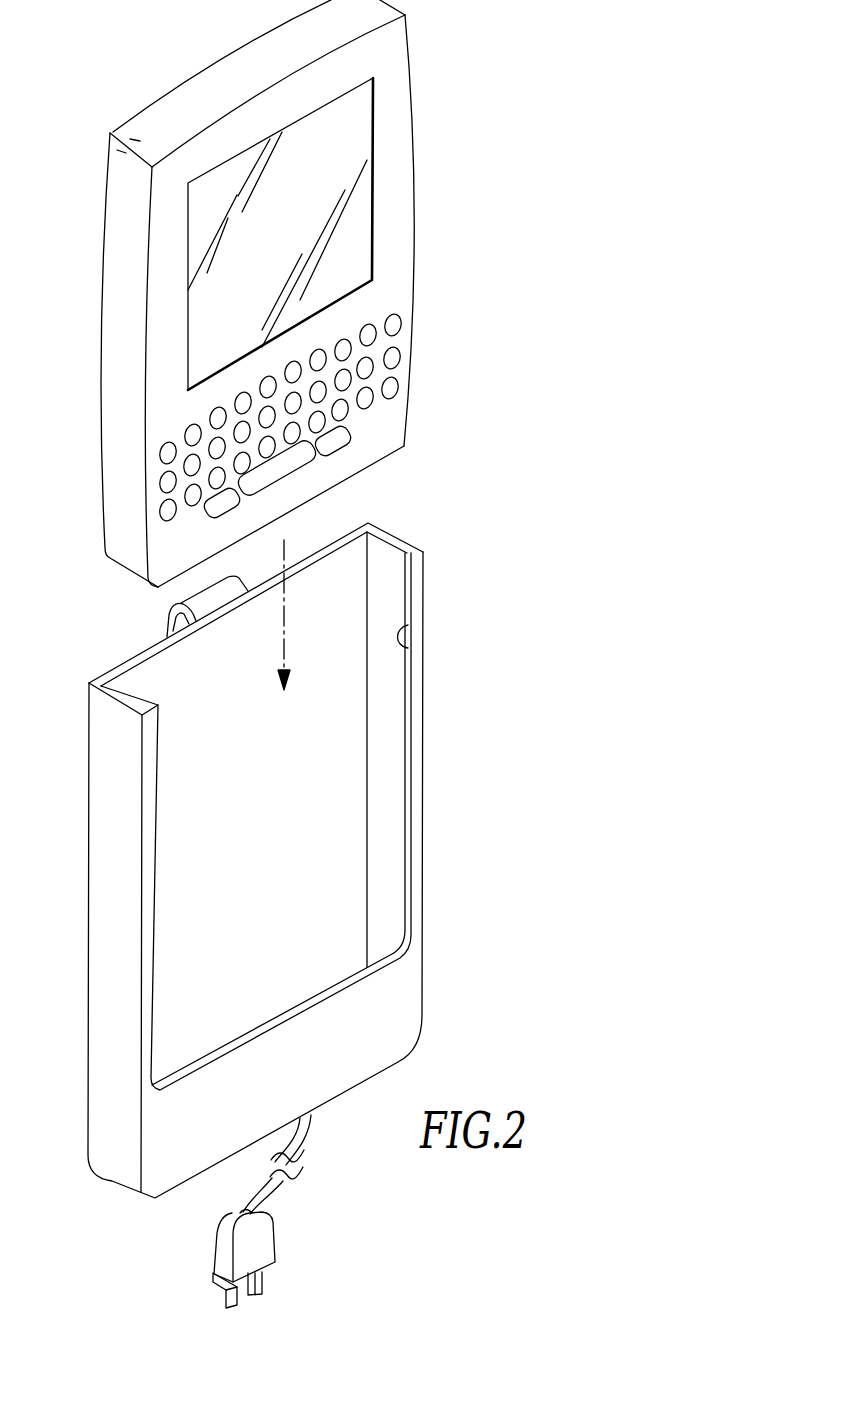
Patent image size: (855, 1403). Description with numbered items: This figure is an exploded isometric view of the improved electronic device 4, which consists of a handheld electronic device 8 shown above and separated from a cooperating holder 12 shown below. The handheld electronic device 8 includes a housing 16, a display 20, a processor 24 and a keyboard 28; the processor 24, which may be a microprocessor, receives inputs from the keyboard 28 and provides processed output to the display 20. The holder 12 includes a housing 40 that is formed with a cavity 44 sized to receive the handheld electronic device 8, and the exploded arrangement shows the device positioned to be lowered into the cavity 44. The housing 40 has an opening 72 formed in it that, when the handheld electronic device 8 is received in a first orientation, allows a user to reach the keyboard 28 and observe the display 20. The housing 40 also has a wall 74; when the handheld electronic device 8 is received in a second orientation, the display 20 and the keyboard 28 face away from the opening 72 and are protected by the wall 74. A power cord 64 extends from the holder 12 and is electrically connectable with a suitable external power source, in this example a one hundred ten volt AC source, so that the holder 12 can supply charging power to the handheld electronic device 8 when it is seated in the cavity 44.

The electronic device 4 is at (291, 293).
The handheld electronic device 8 is at (287, 293).
The holder 12 is at (291, 904).
The housing 16 is at (415, 87).
The display 20 is at (367, 200).
The processor 24 is at (195, 88).
The keyboard 28 is at (403, 340).
The housing 40 is at (423, 820).
The cavity 44 is at (388, 567).
The power cord 64 is at (302, 1143).
The opening 72 is at (408, 650).
The wall 74 is at (152, 680).